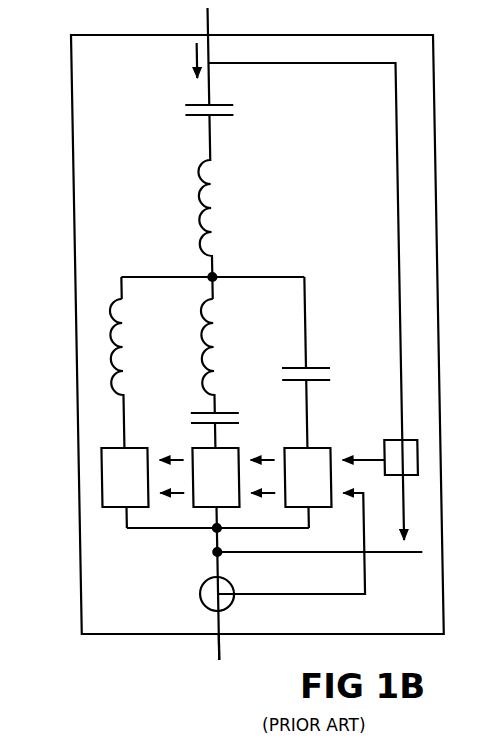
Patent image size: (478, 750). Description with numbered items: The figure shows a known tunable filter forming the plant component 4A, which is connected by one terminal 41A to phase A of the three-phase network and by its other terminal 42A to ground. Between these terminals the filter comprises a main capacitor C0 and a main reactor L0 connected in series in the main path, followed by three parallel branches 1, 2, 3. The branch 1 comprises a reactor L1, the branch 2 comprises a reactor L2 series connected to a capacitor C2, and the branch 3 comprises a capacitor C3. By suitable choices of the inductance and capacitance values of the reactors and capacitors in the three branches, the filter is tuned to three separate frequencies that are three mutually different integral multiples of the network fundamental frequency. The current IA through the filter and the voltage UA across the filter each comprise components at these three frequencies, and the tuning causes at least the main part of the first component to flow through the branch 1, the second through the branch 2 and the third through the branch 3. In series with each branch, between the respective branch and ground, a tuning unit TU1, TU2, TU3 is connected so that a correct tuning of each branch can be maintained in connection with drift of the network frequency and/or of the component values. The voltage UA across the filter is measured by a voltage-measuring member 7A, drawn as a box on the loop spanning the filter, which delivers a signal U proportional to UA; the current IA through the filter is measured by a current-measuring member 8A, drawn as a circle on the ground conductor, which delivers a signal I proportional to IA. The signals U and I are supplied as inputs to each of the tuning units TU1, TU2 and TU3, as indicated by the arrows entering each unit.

The plant component 4A is at (71, 35).
The terminal 41A is at (208, 22).
The terminal 42A is at (206, 650).
The current through the filter IA is at (182, 60).
The voltage across the filter UA is at (316, 307).
The main capacitor C0 is at (232, 116).
The main reactor L0 is at (213, 183).
The branch 1 is at (113, 252).
The branch 2 is at (224, 252).
The branch 3 is at (304, 250).
The reactor L1 is at (120, 347).
The reactor L2 is at (211, 347).
The capacitor C2 is at (222, 411).
The capacitor C3 is at (316, 366).
The tuning unit TU1 is at (111, 510).
The tuning unit TU2 is at (198, 510).
The tuning unit TU3 is at (313, 510).
The signal U is at (271, 446).
The signal I is at (262, 533).
The voltage-measuring member 7A is at (403, 440).
The current-measuring member 8A is at (219, 606).